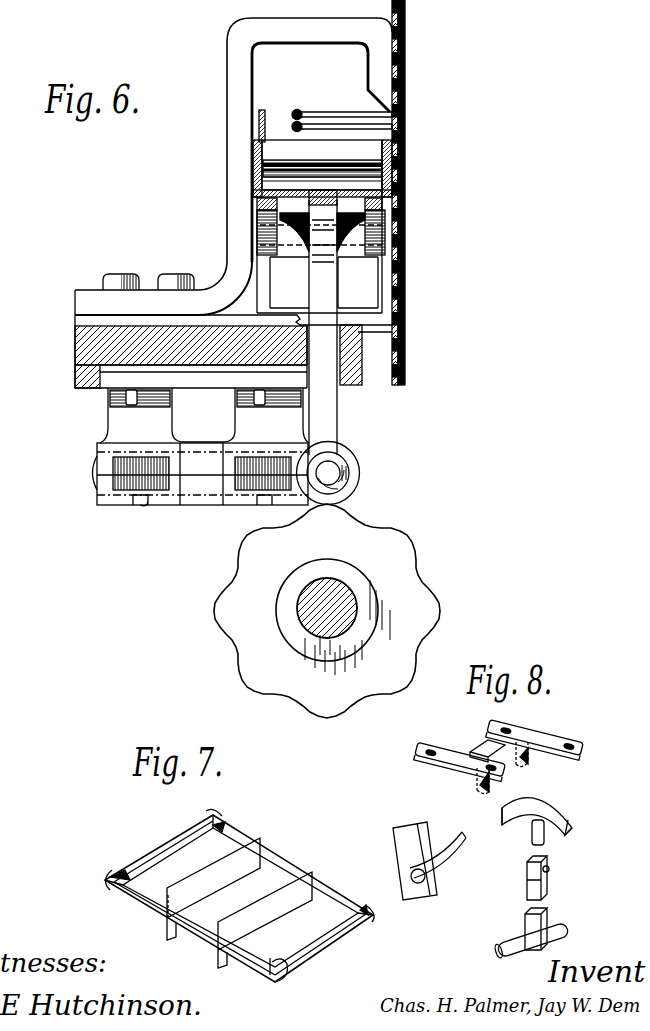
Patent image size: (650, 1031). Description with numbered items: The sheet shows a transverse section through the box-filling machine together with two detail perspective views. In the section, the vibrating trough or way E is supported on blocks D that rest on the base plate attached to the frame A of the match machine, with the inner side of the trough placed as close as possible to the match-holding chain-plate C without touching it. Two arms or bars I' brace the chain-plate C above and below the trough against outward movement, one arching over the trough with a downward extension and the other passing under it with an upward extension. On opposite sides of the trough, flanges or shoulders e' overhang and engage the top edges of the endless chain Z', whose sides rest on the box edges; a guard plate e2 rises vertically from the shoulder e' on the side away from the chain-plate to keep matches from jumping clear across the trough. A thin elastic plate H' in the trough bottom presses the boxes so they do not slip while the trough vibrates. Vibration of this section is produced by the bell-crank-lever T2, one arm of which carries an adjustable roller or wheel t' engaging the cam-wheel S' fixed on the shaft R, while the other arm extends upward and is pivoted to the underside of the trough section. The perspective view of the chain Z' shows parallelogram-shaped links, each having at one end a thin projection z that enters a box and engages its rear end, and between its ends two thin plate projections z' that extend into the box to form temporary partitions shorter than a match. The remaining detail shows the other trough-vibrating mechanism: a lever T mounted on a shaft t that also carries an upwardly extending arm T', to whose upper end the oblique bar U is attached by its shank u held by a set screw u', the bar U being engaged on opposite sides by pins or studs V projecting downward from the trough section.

In FIG. 6, the chain-plate C is at (407, 192).
In FIG. 6, the arm or bar I' is at (256, 203).
In FIG. 6, the frame of the match machine A is at (75, 343).
In FIG. 6, the bell-crank-lever T2 is at (331, 405).
In FIG. 6, the roller or wheel t' is at (340, 473).
In FIG. 6, the vibrating trough or way E is at (253, 177).
In FIG. 6, the endless chain Z' is at (322, 160).
In FIG. 6, the projection (temporary partition) z' is at (322, 157).
In FIG. 7, the projection (temporary partition) z' is at (239, 903).
In FIG. 6, the thin elastic plate H' is at (322, 185).
In FIG. 6, the guard plate e2 is at (265, 112).
In FIG. 6, the flange or shoulder e' is at (321, 125).
In FIG. 6, the block D is at (321, 226).
In FIG. 6, the cam-wheel S' is at (327, 605).
In FIG. 6, the shaft R is at (313, 596).
In FIG. 7, the thin projection z is at (239, 900).
In FIG. 8, the pin or stud V is at (477, 776).
In FIG. 8, the bar U is at (565, 818).
In FIG. 8, the shank u is at (526, 832).
In FIG. 8, the lever T is at (420, 861).
In FIG. 8, the upwardly extending arm T' is at (548, 880).
In FIG. 8, the set screw u' is at (559, 865).
In FIG. 8, the shaft t is at (532, 933).